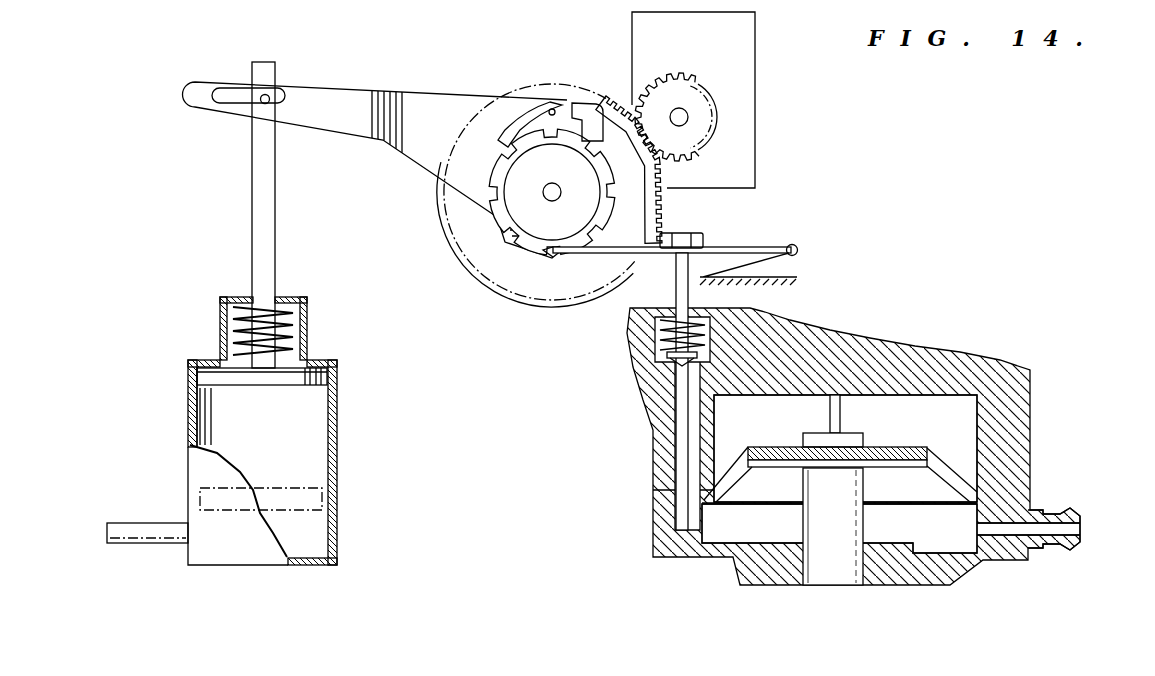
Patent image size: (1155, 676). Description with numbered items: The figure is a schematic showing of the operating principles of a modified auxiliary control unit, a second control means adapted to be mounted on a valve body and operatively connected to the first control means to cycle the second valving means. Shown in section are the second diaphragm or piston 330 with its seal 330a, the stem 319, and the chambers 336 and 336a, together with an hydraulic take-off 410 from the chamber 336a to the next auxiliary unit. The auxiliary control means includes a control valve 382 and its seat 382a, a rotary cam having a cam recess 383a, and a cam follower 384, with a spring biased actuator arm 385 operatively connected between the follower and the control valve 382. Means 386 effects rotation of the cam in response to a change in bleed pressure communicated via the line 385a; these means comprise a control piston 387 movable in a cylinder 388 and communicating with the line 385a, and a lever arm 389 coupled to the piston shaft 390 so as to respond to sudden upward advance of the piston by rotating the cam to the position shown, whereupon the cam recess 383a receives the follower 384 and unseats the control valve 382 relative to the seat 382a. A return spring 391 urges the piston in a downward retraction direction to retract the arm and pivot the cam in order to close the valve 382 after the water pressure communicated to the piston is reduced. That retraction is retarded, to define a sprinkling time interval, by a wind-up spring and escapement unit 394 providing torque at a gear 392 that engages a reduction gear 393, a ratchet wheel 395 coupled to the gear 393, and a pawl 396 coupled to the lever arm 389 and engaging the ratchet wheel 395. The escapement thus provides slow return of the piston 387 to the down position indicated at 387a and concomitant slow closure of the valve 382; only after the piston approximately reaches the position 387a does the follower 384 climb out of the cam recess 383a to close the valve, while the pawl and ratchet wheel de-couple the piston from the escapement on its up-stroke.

The means for effecting rotation of the cam 386 is at (331, 158).
The lever arm 389 is at (308, 98).
The piston shaft 390 is at (272, 231).
The return spring 391 is at (284, 342).
The control piston 387 is at (213, 378).
The cylinder 388 is at (337, 422).
The down position of the piston 387a is at (287, 494).
The line 385a is at (146, 527).
The cam recess 383a is at (478, 263).
The cam follower 384 is at (553, 258).
The ratchet wheel 395 is at (578, 137).
The pawl 396 is at (513, 128).
The gear 392 is at (654, 108).
The reduction gear 393 is at (633, 184).
The wind-up spring and escapement unit 394 is at (743, 97).
The spring biased actuator arm 385 is at (626, 245).
The control valve 382 is at (662, 343).
The seat 382a is at (698, 357).
The chamber 336 is at (845, 448).
The chamber 336a is at (839, 528).
The second diaphragm or piston 330 is at (894, 450).
The seal 330a is at (955, 471).
The hydraulic take-off 410 is at (1057, 512).
The stem 319 is at (830, 568).